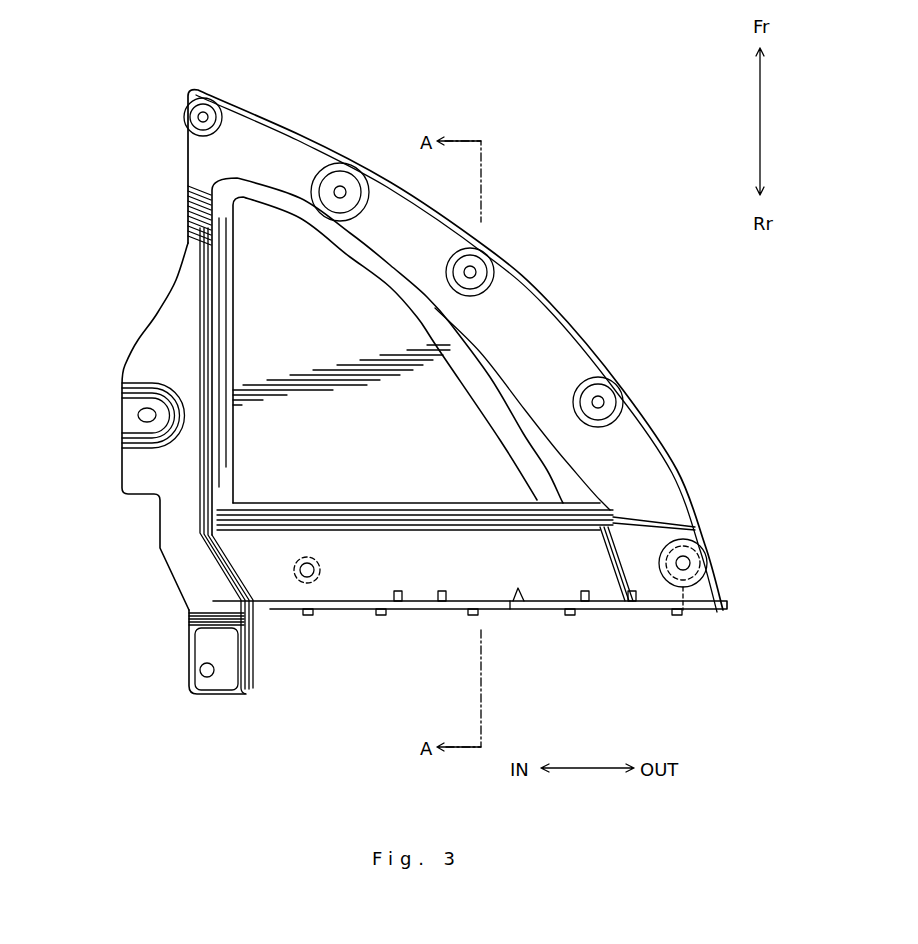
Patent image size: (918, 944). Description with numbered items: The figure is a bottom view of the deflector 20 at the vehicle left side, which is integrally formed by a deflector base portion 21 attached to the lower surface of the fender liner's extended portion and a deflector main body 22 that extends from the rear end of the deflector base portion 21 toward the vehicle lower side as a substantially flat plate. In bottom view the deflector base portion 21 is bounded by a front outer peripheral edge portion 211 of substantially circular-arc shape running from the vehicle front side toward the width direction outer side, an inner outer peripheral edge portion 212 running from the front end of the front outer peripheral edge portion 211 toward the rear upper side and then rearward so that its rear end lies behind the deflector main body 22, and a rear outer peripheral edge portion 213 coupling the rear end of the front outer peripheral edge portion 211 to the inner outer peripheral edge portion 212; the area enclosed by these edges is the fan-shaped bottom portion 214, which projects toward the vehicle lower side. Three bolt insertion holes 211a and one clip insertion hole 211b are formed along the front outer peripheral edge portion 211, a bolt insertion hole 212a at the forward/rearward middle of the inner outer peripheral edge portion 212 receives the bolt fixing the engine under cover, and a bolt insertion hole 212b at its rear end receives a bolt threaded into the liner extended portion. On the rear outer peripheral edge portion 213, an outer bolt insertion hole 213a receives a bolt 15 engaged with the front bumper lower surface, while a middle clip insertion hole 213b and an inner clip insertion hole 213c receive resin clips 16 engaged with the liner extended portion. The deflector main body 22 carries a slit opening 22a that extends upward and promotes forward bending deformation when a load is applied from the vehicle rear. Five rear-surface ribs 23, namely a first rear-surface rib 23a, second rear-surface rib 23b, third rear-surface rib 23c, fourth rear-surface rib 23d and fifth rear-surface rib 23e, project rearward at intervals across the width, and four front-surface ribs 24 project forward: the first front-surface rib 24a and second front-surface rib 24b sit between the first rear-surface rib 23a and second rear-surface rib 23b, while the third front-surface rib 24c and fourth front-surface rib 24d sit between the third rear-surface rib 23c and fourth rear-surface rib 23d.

The deflector 20 is at (109, 65).
The deflector base portion 21 is at (557, 299).
The front outer peripheral edge portion 211 is at (280, 148).
The bolt insertion hole 211a is at (206, 112).
The clip insertion hole 211b is at (341, 190).
The inner outer peripheral edge portion 212 is at (172, 332).
The bolt insertion hole 212a is at (143, 413).
The bolt insertion hole 212b is at (200, 668).
The rear outer peripheral edge portion 213 is at (643, 540).
The outer bolt insertion hole 213a is at (683, 560).
The middle clip insertion hole 213b is at (497, 590).
The inner clip insertion hole 213c is at (300, 583).
The fan-shaped bottom portion 214 is at (278, 458).
The resin clip 16 is at (297, 557).
The bolt 15 is at (683, 612).
The deflector main body 22 is at (712, 597).
The slit opening 22a is at (520, 606).
The rear-surface ribs 23 is at (485, 672).
The first rear-surface rib 23a is at (673, 612).
The second rear-surface rib 23b is at (566, 617).
The third rear-surface rib 23c is at (473, 617).
The fourth rear-surface rib 23d is at (381, 616).
The fifth rear-surface rib 23e is at (308, 617).
The front-surface ribs 24 is at (483, 566).
The first front-surface rib 24a is at (632, 592).
The second front-surface rib 24b is at (585, 596).
The third front-surface rib 24c is at (442, 594).
The fourth front-surface rib 24d is at (400, 594).